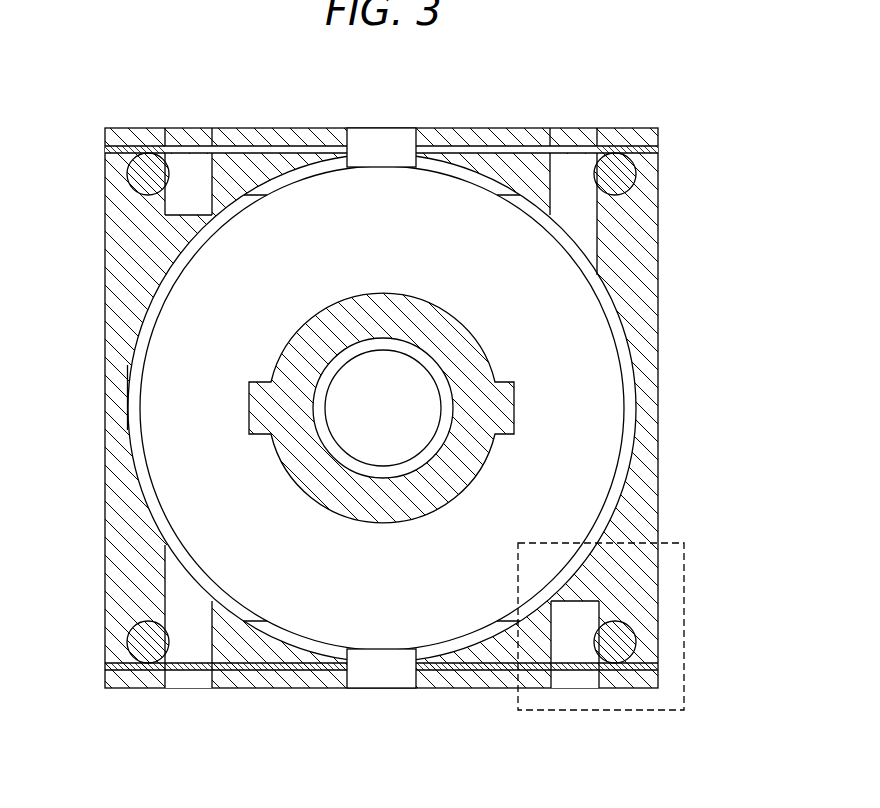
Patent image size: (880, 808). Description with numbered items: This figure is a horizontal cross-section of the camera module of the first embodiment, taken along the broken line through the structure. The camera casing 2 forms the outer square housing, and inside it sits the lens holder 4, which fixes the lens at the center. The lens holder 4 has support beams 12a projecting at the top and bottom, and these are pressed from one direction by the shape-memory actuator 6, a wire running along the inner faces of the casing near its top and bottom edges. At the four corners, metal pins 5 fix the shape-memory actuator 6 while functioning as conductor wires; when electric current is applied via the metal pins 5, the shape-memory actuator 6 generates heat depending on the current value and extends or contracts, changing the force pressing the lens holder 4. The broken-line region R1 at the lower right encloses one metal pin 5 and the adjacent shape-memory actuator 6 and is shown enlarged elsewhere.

The camera casing 2 is at (648, 308).
The lens holder 4 is at (460, 343).
The metal pin 5 is at (132, 184).
The shape-memory actuator 6 is at (510, 147).
The support beam 12a is at (383, 142).
The region R1 is at (684, 580).